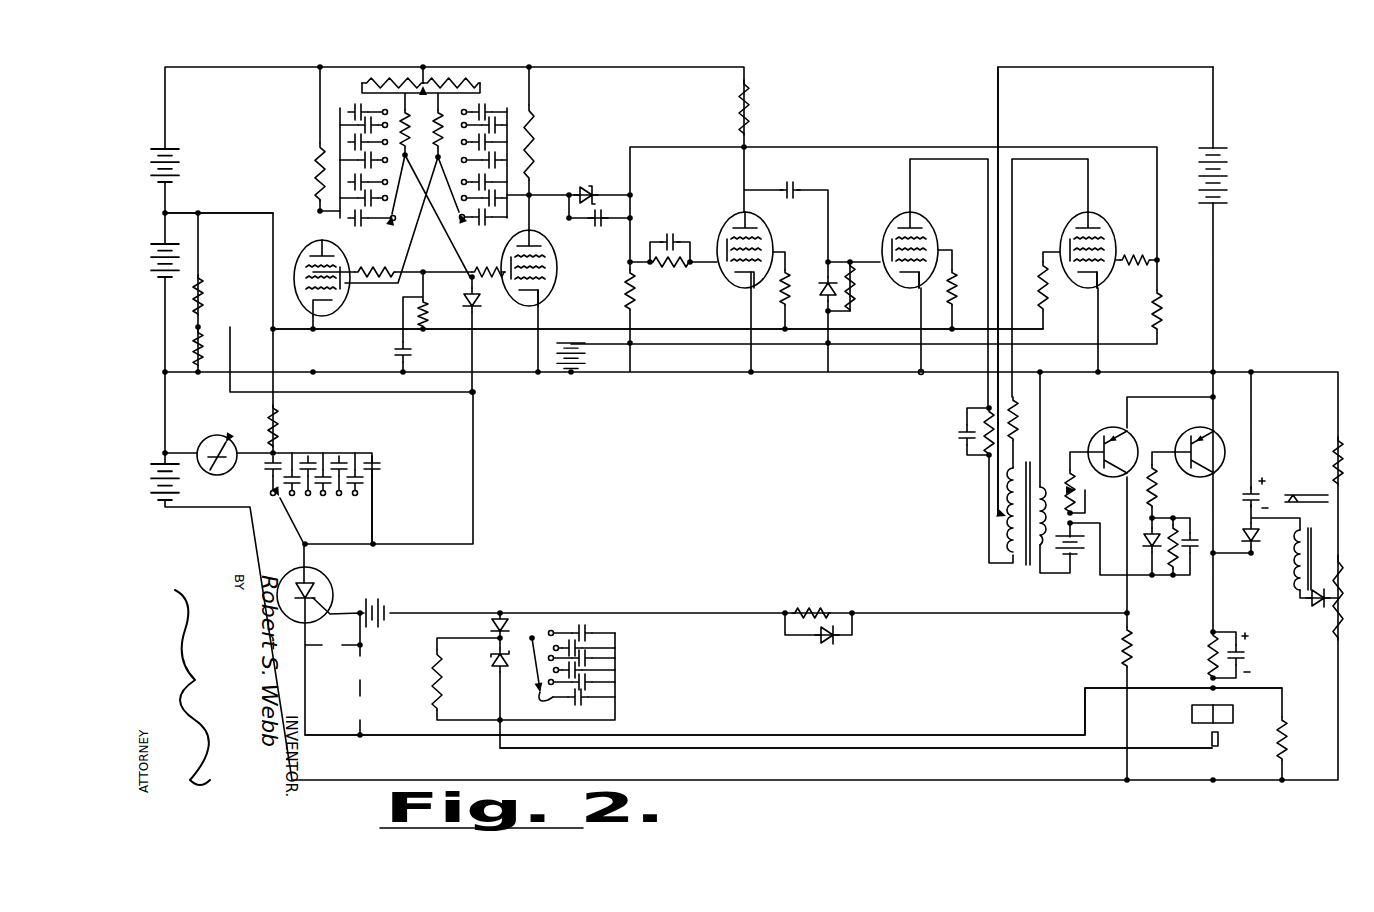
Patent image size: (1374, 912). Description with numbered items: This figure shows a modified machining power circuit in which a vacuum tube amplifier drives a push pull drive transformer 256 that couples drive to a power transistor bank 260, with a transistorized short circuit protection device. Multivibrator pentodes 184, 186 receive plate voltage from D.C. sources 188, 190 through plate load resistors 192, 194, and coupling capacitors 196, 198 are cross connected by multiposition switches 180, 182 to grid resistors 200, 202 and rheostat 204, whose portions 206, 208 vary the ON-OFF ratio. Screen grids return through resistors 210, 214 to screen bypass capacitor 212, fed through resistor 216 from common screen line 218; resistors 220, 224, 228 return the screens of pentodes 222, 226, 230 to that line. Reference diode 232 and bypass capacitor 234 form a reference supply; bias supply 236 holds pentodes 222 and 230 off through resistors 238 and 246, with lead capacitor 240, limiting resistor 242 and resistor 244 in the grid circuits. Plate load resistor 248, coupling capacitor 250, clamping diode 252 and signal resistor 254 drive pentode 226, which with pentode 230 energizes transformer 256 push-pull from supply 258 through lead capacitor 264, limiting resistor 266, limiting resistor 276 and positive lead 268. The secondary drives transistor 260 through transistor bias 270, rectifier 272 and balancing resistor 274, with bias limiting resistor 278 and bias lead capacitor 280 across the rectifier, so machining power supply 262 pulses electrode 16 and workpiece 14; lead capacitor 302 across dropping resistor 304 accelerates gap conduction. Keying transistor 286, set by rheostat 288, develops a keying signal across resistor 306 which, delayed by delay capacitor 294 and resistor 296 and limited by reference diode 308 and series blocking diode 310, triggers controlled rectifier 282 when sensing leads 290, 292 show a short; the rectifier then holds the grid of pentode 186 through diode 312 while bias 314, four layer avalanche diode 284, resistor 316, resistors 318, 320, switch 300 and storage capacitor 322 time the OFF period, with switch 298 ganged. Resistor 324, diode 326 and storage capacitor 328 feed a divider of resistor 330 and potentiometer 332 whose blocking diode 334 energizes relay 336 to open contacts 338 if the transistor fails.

The workpiece 14 is at (1192, 714).
The electrode 16 is at (1205, 742).
The multiposition switch 180 is at (398, 198).
The multiposition switch 182 is at (441, 204).
The multivibrator pentode 184 is at (332, 304).
The multivibrator pentode 186 is at (550, 298).
The D.C. source 188 is at (182, 251).
The D.C. source 190 is at (165, 150).
The plate load resistor 192 is at (317, 170).
The plate load resistor 194 is at (531, 140).
The coupling capacitor 196 is at (340, 116).
The coupling capacitor 198 is at (507, 114).
The grid resistor 200 is at (380, 136).
The grid resistor 202 is at (448, 112).
The rheostat 204 is at (421, 124).
The rheostat portion 206 is at (394, 67).
The rheostat portion 208 is at (438, 66).
The resistor 210 is at (374, 270).
The screen bypass capacitor 212 is at (398, 357).
The resistor 214 is at (476, 268).
The resistor 216 is at (433, 288).
The common screen line 218 is at (199, 213).
The resistor 220 is at (786, 262).
The buffer pentode 222 is at (745, 286).
The resistor 224 is at (968, 242).
The drive pentode 226 is at (895, 282).
The resistor 228 is at (1043, 320).
The amplifier pentode 230 is at (1042, 284).
The reference diode 232 is at (596, 169).
The bypass capacitor 234 is at (590, 226).
The bias supply 236 is at (590, 358).
The bias resistor 238 is at (635, 297).
The lead capacitor 240 is at (674, 238).
The limiting resistor 242 is at (665, 268).
The resistor 244 is at (1130, 256).
The resistor 246 is at (1154, 318).
The plate load resistor 248 is at (754, 114).
The coupling capacitor 250 is at (790, 180).
The clamping diode 252 is at (812, 292).
The signal resistor 254 is at (857, 296).
The drive transformer 256 is at (1023, 572).
The D.C. supply voltage 258 is at (1232, 173).
The power transistor bank 260 is at (1181, 430).
The machining power supply 262 is at (185, 488).
The lead capacitor 264 is at (956, 435).
The limiting resistor 266 is at (983, 406).
The positive lead 268 is at (997, 116).
The transistor bias 270 is at (1065, 560).
The rectifier 272 is at (1145, 580).
The balancing resistor 274 is at (1158, 495).
The limiting resistor 276 is at (1018, 422).
The bias limiting resistor 278 is at (1184, 600).
The bias lead capacitor 280 is at (1175, 580).
The controlled rectifier 282 is at (331, 580).
The four layer avalanche diode 284 is at (230, 420).
The keying transistor 286 is at (1108, 398).
The rheostat 288 is at (1059, 463).
The sensing lead 290 is at (1026, 752).
The sensing lead 292 is at (1008, 732).
The delay capacitor 294 is at (616, 648).
The resistor 296 is at (812, 610).
The tap switch 298 is at (535, 638).
The tap switch 300 is at (300, 525).
The lead capacitor 302 is at (1248, 656).
The dropping resistor 304 is at (1211, 658).
The resistor 306 is at (1125, 654).
The reference diode 308 is at (488, 670).
The series blocking diode 310 is at (488, 624).
The diode 312 is at (484, 302).
The bias 314 is at (383, 596).
The resistor 316 is at (283, 422).
The resistor 318 is at (200, 327).
The resistor 320 is at (202, 295).
The storage capacitor 322 is at (372, 482).
The resistor 324 is at (1282, 724).
The diode 326 is at (1266, 540).
The storage capacitor 328 is at (1282, 474).
The resistor 330 is at (1336, 440).
The potentiometer 332 is at (1334, 634).
The blocking diode 334 is at (1315, 615).
The relay 336 is at (1292, 588).
The contacts 338 is at (1312, 494).